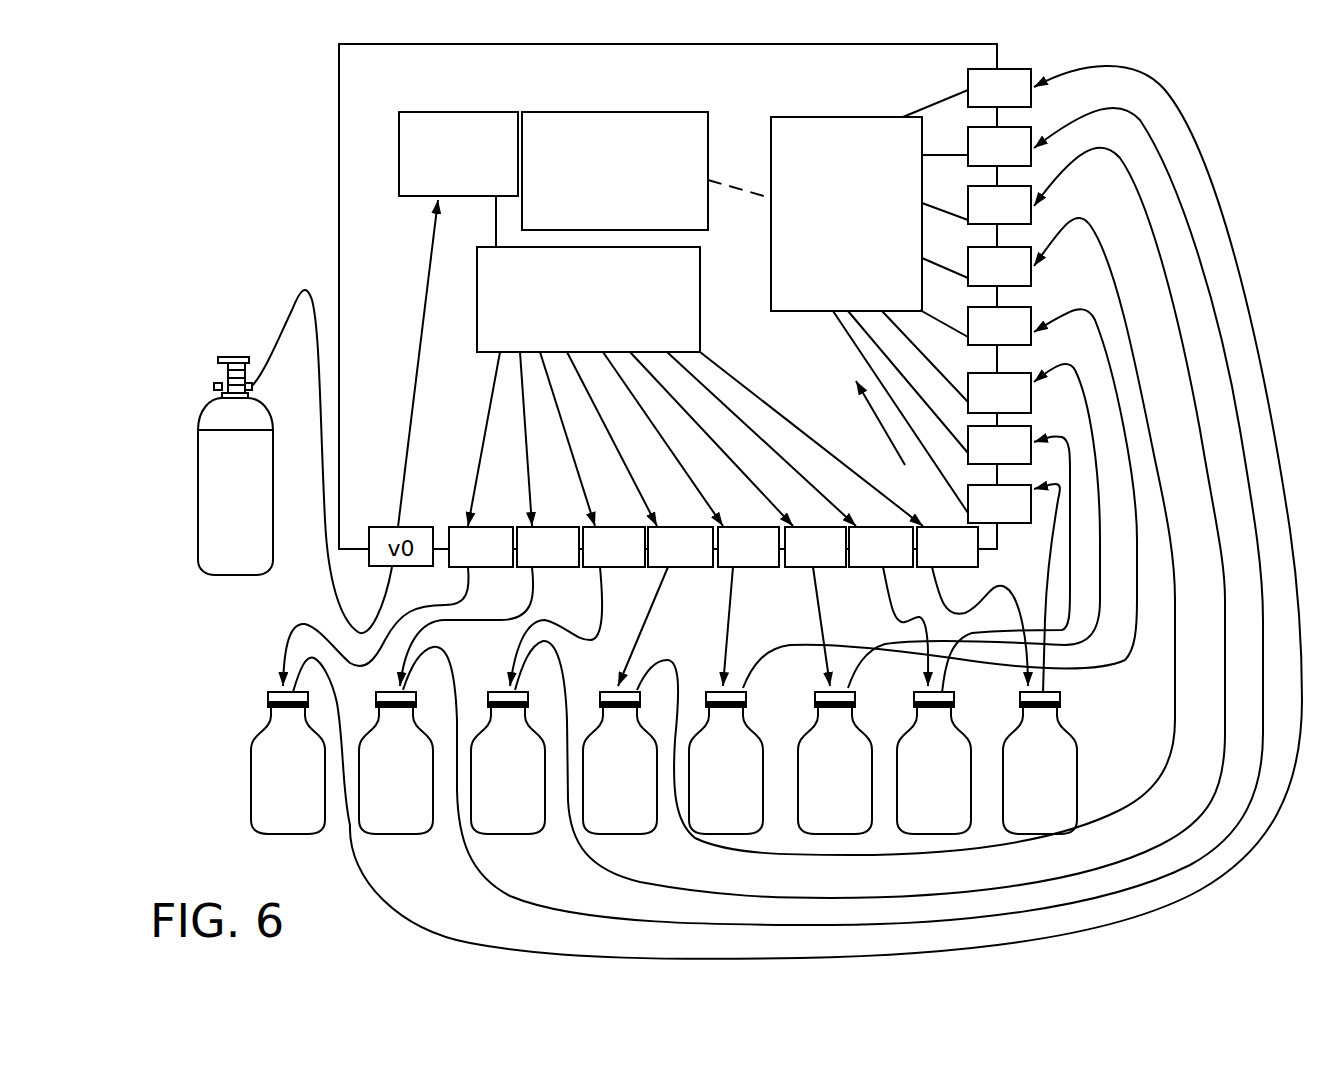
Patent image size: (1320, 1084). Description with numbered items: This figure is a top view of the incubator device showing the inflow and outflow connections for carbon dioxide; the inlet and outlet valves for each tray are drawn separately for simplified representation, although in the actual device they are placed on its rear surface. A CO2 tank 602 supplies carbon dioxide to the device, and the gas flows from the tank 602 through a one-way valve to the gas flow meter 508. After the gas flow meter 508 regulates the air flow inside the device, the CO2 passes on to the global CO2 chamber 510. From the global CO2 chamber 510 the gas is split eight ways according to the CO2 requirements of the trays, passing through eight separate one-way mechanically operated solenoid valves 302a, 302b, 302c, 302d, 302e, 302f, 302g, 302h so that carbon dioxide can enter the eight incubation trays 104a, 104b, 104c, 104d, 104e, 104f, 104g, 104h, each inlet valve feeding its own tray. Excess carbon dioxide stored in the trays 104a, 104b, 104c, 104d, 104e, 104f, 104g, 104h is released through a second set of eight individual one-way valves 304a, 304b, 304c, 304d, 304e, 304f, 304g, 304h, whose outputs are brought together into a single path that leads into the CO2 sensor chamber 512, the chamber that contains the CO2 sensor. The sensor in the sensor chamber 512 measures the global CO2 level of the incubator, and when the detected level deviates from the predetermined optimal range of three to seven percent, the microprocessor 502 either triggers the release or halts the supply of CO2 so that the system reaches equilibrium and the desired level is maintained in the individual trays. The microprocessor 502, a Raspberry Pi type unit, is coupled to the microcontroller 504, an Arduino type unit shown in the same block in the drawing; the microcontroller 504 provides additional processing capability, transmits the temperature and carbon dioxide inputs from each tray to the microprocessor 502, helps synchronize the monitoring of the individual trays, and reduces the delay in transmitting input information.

The gas flow meter 508 is at (413, 166).
The CO2 tank 602 is at (199, 453).
The microprocessor 502 is at (556, 212).
The microcontroller 504 is at (650, 212).
The global CO2 chamber 510 is at (562, 334).
The CO2 sensor chamber 512 is at (824, 260).
The one-way mechanically operated solenoid valve 302a is at (456, 561).
The one-way mechanically operated solenoid valve 302b is at (523, 561).
The one-way mechanically operated solenoid valve 302c is at (589, 561).
The one-way mechanically operated solenoid valve 302d is at (655, 561).
The one-way mechanically operated solenoid valve 302e is at (723, 561).
The one-way mechanically operated solenoid valve 302f is at (791, 561).
The one-way mechanically operated solenoid valve 302g is at (856, 561).
The one-way mechanically operated solenoid valve 302h is at (922, 561).
The one-way valve 304a is at (1024, 102).
The one-way valve 304b is at (1024, 161).
The one-way valve 304c is at (1024, 219).
The one-way valve 304d is at (1024, 281).
The one-way valve 304e is at (1024, 340).
The one-way valve 304f is at (1024, 407).
The one-way valve 304g is at (1024, 459).
The one-way valve 304h is at (1024, 518).
The tray 104a is at (259, 775).
The tray 104b is at (367, 783).
The tray 104c is at (479, 783).
The tray 104d is at (591, 780).
The tray 104e is at (697, 787).
The tray 104f is at (806, 793).
The tray 104g is at (905, 782).
The tray 104h is at (1011, 782).